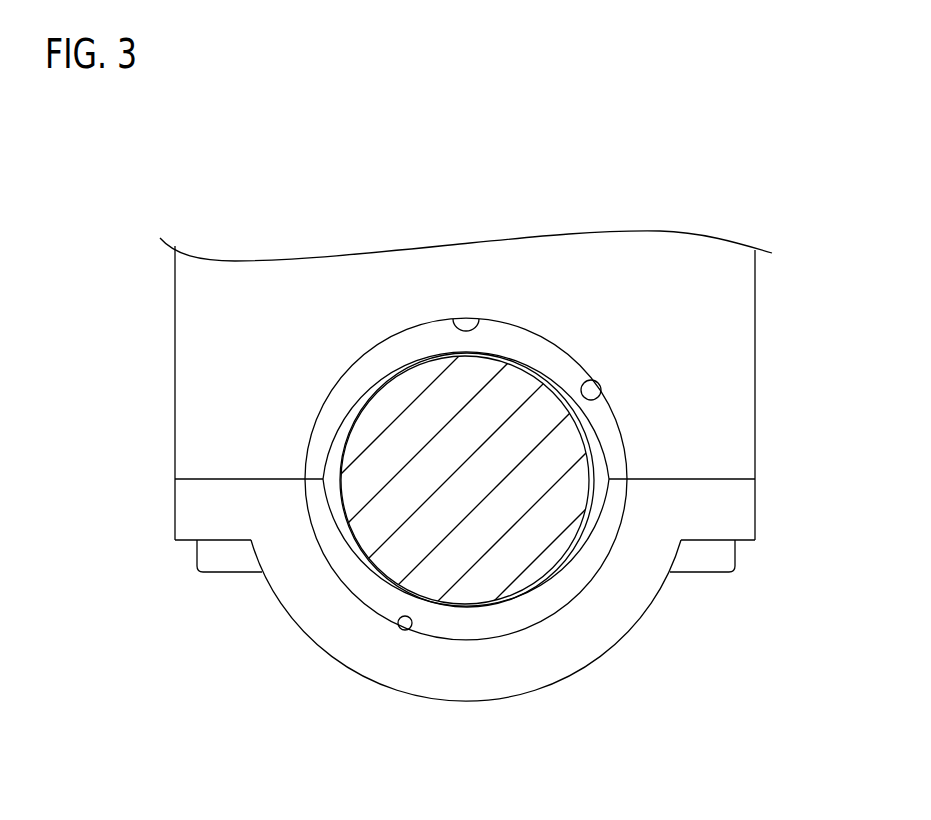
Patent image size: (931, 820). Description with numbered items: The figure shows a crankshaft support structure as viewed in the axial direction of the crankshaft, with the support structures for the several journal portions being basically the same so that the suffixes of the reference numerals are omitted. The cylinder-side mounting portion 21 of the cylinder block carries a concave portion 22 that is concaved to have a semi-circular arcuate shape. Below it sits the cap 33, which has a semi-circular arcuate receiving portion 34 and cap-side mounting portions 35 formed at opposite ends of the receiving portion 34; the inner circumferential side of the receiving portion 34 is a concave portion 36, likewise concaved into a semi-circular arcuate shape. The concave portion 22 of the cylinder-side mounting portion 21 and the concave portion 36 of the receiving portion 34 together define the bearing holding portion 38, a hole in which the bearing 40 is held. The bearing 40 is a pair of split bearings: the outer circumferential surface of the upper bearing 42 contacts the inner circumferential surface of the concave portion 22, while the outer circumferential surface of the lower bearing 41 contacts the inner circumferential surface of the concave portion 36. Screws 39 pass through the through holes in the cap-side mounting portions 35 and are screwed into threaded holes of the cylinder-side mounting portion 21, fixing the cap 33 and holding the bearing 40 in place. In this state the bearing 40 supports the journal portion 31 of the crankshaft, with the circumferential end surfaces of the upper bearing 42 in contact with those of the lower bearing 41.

The cylinder-side mounting portion 21 is at (756, 371).
The concave portion 22 is at (478, 319).
The journal portion 31 is at (513, 563).
The cap 33 is at (497, 631).
The receiving portion 34 is at (467, 703).
The cap-side mounting portion 35 is at (197, 502).
The concave portion 36 is at (399, 627).
The bearing holding portion 38 is at (601, 397).
The screw 39 is at (224, 573).
The bearing 40 is at (408, 479).
The lower bearing 41 is at (313, 500).
The upper bearing 42 is at (323, 433).